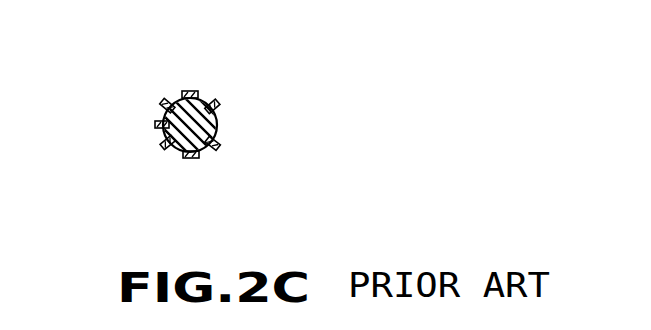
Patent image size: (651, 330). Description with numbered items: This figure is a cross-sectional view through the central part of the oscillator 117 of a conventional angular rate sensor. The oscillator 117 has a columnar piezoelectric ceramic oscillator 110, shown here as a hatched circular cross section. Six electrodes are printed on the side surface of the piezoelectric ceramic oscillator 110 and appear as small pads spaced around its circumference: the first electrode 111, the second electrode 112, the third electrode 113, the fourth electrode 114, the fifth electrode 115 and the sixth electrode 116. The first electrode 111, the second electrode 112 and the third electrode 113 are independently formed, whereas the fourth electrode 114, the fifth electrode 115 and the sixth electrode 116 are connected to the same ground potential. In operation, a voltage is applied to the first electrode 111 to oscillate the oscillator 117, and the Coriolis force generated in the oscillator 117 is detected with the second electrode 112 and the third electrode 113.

The columnar piezoelectric ceramic oscillator 110 is at (160, 125).
The first electrode 111 is at (192, 158).
The second electrode 112 is at (214, 101).
The third electrode 113 is at (166, 102).
The fourth electrode 114 is at (190, 91).
The fifth electrode 115 is at (164, 144).
The sixth electrode 116 is at (217, 147).
The oscillator 117 is at (217, 171).